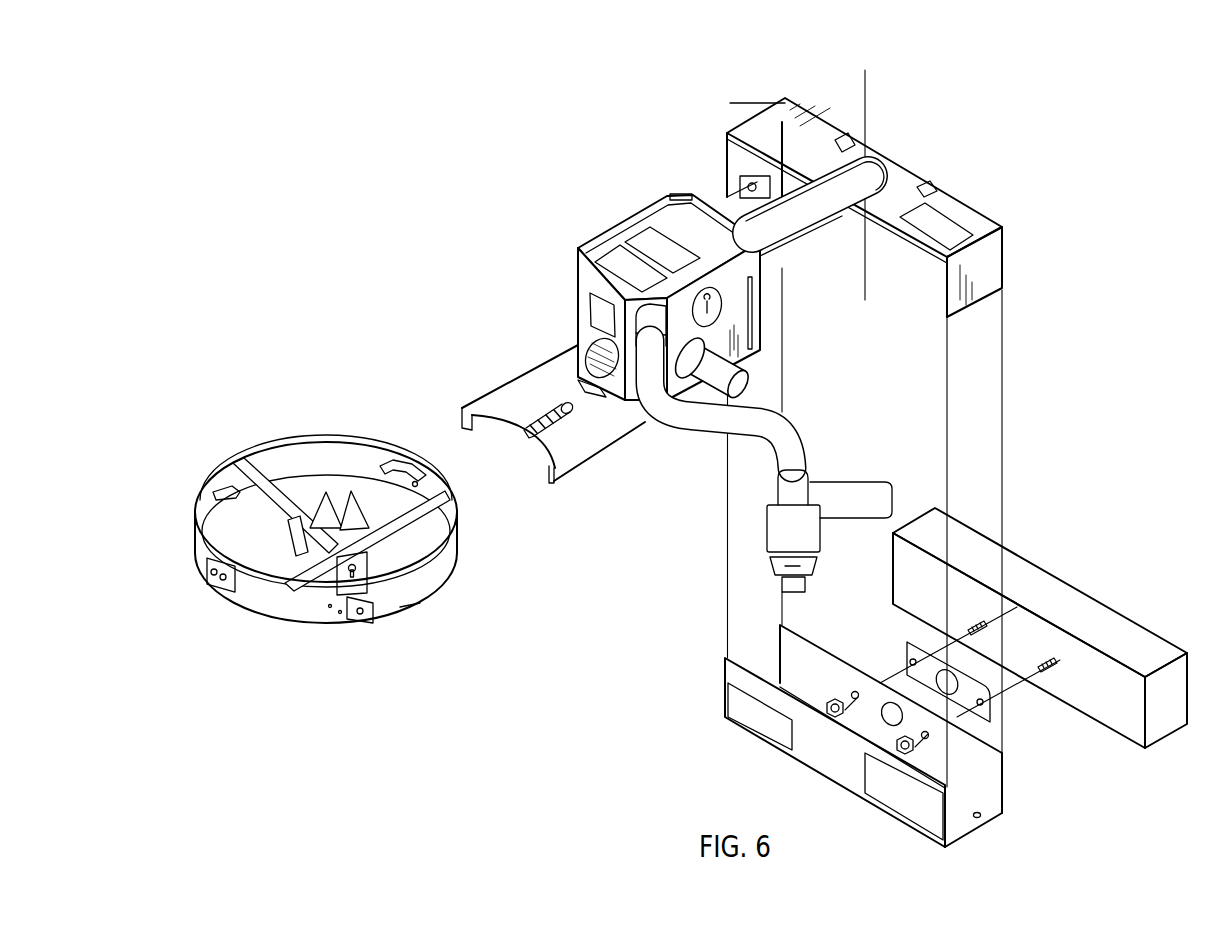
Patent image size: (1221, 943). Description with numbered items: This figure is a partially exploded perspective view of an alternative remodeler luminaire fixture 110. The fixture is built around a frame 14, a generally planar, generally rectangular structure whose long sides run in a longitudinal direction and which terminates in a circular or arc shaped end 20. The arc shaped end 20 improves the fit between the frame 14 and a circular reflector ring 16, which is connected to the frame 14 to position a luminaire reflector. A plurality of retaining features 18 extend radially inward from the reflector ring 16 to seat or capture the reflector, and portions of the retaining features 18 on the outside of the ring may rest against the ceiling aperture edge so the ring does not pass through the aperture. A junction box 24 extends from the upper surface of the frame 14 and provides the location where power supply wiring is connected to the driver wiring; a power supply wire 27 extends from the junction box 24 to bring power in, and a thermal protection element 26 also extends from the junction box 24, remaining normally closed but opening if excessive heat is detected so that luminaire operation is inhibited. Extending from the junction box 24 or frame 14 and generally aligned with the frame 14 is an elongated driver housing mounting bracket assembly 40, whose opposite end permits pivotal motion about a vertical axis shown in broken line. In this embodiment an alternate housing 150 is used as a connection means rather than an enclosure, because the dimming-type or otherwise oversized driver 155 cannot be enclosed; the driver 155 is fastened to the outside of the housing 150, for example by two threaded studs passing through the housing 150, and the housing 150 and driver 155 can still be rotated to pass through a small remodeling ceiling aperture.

The alternative luminaire fixture 110 is at (328, 108).
The frame 14 is at (505, 365).
The reflector ring 16 is at (270, 425).
The retaining features 18 is at (380, 455).
The arc shaped end 20 is at (510, 460).
The junction box 24 is at (606, 208).
The thermal protection element 26 is at (760, 393).
The power supply wire 27 is at (718, 430).
The driver housing mounting bracket assembly 40 is at (822, 252).
The housing 150 is at (985, 190).
The driver 155 is at (1068, 603).